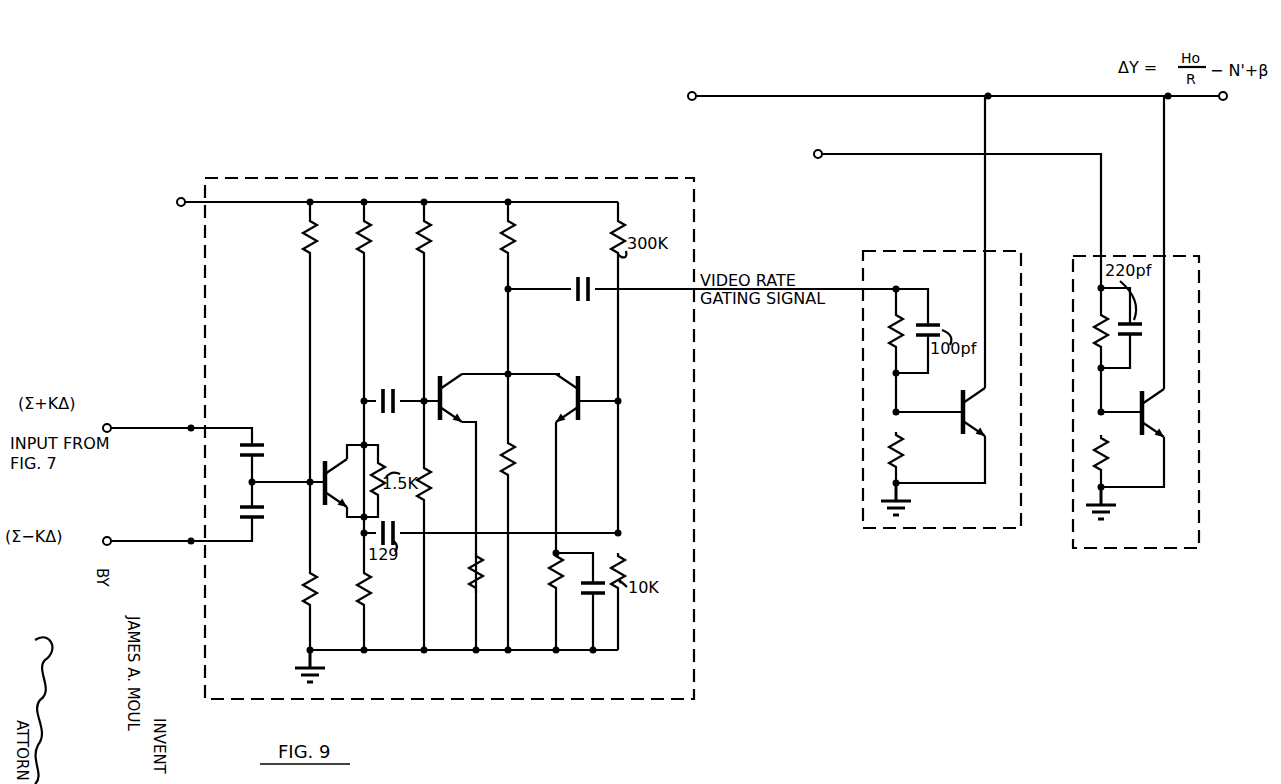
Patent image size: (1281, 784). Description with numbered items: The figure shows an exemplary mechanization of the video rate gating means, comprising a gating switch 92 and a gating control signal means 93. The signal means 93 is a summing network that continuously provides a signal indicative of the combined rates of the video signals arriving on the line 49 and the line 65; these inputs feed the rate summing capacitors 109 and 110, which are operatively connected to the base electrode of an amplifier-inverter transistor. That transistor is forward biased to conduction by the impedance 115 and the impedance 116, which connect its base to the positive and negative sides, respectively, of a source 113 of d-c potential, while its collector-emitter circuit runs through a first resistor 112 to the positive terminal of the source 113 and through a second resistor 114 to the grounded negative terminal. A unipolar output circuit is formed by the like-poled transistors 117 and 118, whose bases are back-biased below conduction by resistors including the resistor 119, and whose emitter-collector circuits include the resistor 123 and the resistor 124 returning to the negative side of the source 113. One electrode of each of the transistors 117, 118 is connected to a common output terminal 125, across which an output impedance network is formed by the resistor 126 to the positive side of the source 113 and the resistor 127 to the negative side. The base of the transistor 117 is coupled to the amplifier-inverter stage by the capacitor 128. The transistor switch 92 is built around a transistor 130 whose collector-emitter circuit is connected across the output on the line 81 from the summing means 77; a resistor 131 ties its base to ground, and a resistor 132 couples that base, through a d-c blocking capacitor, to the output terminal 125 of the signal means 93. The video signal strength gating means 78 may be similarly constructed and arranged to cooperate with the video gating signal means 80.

The gating control signal means 93 is at (246, 182).
The source of d-c potential 113 is at (181, 206).
The impedance 115 is at (306, 233).
The first resistor 112 is at (345, 270).
The resistor 119 is at (408, 323).
The resistor 126 is at (428, 500).
The common output terminal 125 is at (510, 289).
The capacitor 128 is at (392, 392).
The transistor 117 is at (442, 382).
The transistor 118 is at (581, 385).
The resistor 127 is at (520, 452).
The rate summing capacitor 109 is at (268, 452).
The rate summing capacitor 110 is at (252, 521).
The line 49 is at (167, 428).
The line 65 is at (132, 541).
The impedance 116 is at (306, 578).
The second resistor 114 is at (345, 620).
The resistor 123 is at (476, 565).
The resistor 124 is at (556, 560).
The summing means 77 is at (688, 95).
The line 81 is at (903, 96).
The video gating signal means 80 is at (817, 158).
The gating switch 92 is at (918, 251).
The video signal strength gating means 78 is at (1085, 256).
The resistor 132 is at (893, 322).
The transistor 130 is at (963, 430).
The resistor 131 is at (838, 478).